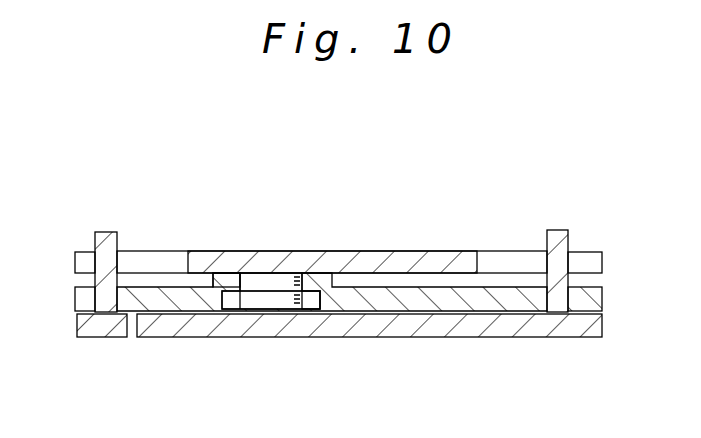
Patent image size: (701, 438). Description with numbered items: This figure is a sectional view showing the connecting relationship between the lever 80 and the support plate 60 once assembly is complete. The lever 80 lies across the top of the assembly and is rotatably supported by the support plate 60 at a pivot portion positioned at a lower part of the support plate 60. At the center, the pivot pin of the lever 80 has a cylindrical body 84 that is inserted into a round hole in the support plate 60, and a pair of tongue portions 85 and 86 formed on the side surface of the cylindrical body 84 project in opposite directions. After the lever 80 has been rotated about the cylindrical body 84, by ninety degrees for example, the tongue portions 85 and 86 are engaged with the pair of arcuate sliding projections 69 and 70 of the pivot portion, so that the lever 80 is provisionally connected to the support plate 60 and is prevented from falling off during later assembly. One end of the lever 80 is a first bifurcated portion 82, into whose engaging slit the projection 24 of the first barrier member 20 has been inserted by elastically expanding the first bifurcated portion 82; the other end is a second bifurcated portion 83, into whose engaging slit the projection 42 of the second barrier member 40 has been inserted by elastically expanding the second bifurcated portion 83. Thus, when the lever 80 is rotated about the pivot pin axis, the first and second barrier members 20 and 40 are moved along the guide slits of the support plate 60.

The first barrier member 20 is at (102, 338).
The projection 24 is at (107, 232).
The second barrier member 40 is at (438, 338).
The projection 42 is at (560, 230).
The support plate 60 is at (457, 286).
The arcuate sliding projection 69 is at (235, 278).
The arcuate sliding projection 70 is at (312, 280).
The lever 80 is at (400, 250).
The first bifurcated portion 82 is at (67, 252).
The second bifurcated portion 83 is at (604, 257).
The cylindrical body 84 is at (280, 283).
The tongue portion 85 is at (229, 311).
The tongue portion 86 is at (308, 311).